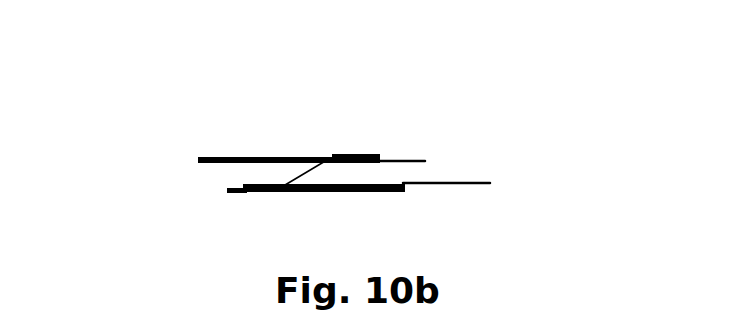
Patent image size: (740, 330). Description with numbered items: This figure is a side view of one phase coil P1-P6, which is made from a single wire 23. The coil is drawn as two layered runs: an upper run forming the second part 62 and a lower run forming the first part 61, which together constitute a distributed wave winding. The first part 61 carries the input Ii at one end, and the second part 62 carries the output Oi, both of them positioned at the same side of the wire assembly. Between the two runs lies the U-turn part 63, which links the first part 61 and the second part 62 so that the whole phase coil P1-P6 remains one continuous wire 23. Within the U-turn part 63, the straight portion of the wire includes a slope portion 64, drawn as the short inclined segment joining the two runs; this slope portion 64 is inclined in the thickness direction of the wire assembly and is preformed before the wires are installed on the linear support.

The phase coil P1-P6 is at (203, 100).
The wire 23 is at (280, 155).
The second part 62 is at (187, 158).
The U-turn part 63 is at (342, 175).
The slope portion 64 is at (293, 170).
The first part 61 is at (217, 193).
The output Oi is at (403, 160).
The input Ii is at (460, 185).